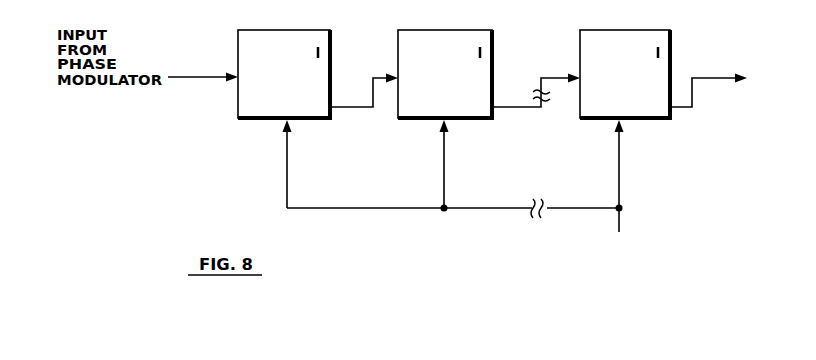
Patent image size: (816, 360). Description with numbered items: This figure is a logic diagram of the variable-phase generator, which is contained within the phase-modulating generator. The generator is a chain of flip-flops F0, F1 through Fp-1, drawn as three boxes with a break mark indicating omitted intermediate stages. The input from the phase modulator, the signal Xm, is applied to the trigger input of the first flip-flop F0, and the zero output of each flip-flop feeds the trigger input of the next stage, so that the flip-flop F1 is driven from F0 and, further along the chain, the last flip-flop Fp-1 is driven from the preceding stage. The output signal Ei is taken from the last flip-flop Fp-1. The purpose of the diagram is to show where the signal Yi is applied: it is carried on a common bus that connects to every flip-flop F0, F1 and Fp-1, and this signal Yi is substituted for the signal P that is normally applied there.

The flip-flop F0 is at (285, 63).
The flip-flop F1 is at (446, 17).
The flip-flop Fp-1 is at (626, 63).
The input from phase modulator Xm is at (203, 69).
The output signal Ei is at (720, 89).
The signal Yi is at (456, 189).